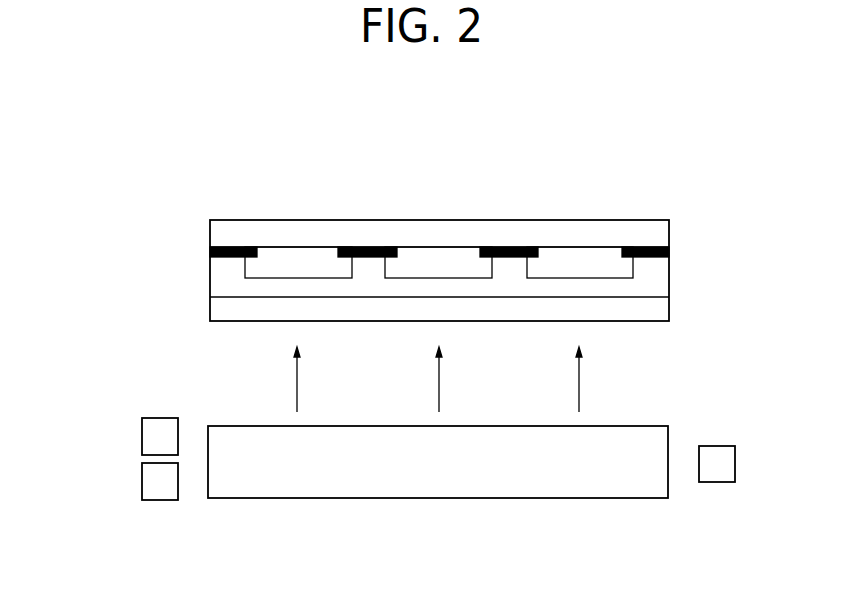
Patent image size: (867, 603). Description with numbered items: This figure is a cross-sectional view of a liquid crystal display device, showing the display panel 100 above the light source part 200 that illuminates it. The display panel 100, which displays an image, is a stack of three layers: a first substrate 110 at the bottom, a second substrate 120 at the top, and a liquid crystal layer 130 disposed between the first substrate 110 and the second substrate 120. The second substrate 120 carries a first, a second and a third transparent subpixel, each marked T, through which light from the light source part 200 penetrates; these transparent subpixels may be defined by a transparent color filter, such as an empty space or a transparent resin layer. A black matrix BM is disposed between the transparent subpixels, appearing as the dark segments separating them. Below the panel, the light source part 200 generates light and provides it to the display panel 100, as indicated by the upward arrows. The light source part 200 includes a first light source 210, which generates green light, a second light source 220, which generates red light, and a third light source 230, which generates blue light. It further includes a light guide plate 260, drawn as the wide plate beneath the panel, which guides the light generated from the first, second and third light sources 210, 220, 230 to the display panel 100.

The display panel 100 is at (378, 242).
The first substrate 110 is at (403, 307).
The second substrate 120 is at (210, 229).
The liquid crystal layer 130 is at (210, 277).
The black matrix BM is at (364, 247).
The light source part 200 is at (411, 462).
The first light source 210 is at (160, 500).
The second light source 220 is at (160, 418).
The third light source 230 is at (716, 483).
The light guide plate 260 is at (440, 498).